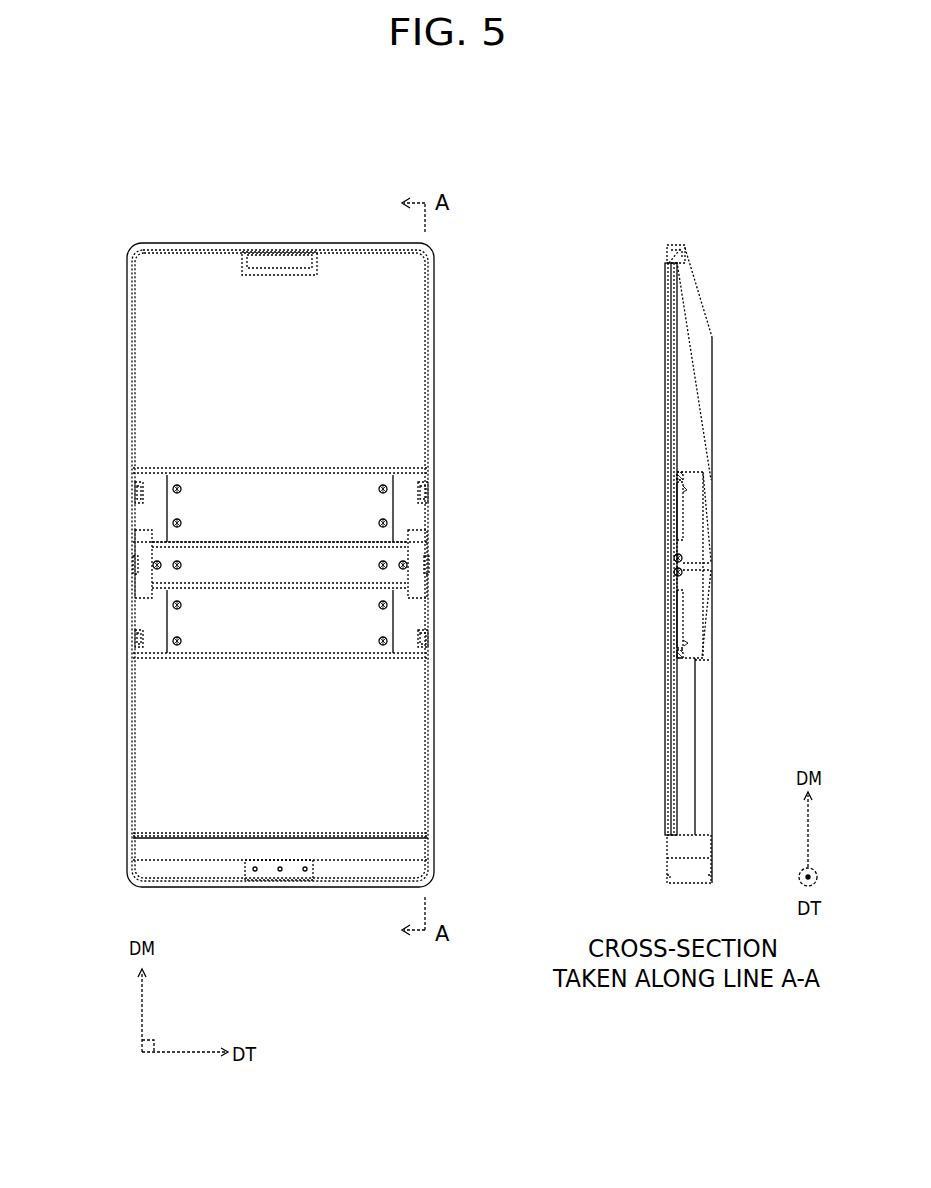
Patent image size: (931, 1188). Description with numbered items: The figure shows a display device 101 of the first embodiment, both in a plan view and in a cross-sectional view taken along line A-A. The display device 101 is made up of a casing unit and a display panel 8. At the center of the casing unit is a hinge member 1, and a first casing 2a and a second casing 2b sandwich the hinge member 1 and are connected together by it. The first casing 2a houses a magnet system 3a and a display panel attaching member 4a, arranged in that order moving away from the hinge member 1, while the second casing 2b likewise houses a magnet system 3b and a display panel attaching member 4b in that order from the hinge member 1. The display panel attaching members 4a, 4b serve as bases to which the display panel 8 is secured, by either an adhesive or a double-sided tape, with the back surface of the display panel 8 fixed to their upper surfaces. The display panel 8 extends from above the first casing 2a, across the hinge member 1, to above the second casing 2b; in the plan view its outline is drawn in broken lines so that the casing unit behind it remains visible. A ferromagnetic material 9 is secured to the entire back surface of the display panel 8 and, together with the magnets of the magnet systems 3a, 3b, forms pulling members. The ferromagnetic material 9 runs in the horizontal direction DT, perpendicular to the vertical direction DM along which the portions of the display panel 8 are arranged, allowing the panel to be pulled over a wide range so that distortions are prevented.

The display device 101 is at (107, 231).
The display panel 8 is at (148, 299).
The ferromagnetic material 9 is at (671, 260).
The first casing 2a is at (436, 338).
The second casing 2b is at (436, 840).
The display panel attaching member 4a is at (402, 386).
The display panel attaching member 4b is at (402, 780).
The magnet system 3a is at (404, 516).
The magnet system 3b is at (404, 621).
The hinge member 1 is at (405, 549).